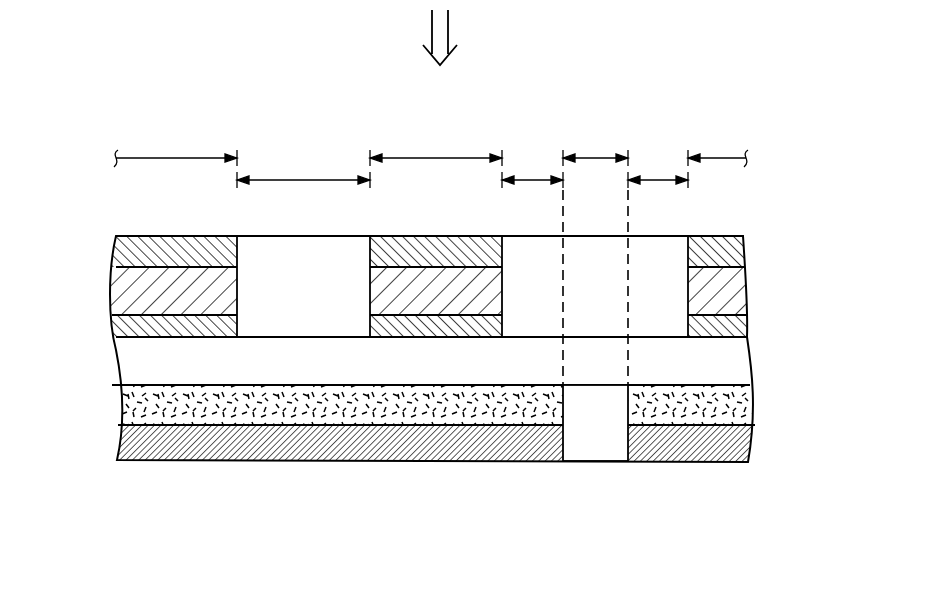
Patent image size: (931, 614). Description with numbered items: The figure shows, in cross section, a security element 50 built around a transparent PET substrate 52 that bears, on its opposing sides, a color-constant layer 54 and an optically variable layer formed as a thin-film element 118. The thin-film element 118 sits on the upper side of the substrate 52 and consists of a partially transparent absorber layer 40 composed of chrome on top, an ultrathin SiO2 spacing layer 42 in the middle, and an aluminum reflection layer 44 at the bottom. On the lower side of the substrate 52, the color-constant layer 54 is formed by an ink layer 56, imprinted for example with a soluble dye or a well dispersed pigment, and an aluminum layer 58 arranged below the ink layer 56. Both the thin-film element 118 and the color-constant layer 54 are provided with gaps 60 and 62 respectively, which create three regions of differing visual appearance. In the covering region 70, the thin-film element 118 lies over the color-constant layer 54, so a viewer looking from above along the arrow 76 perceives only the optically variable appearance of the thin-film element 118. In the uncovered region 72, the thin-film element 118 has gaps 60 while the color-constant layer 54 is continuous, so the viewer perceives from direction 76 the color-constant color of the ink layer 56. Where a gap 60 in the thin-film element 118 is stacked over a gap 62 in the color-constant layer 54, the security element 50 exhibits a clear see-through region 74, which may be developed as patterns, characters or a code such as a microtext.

The absorber layer 40 is at (744, 257).
The spacing layer 42 is at (746, 300).
The reflection layer 44 is at (455, 332).
The security element 50 is at (80, 231).
The substrate 52 is at (735, 367).
The color-constant layer 54 is at (480, 425).
The ink layer 56 is at (746, 412).
The aluminum layer 58 is at (455, 445).
The gaps 60 is at (302, 250).
The gaps 62 is at (593, 445).
The covering region 70 is at (170, 155).
The uncovered region 72 is at (303, 175).
The see-through regions 74 is at (594, 155).
The viewing direction 76 is at (448, 22).
The thin-film element 118 is at (486, 292).